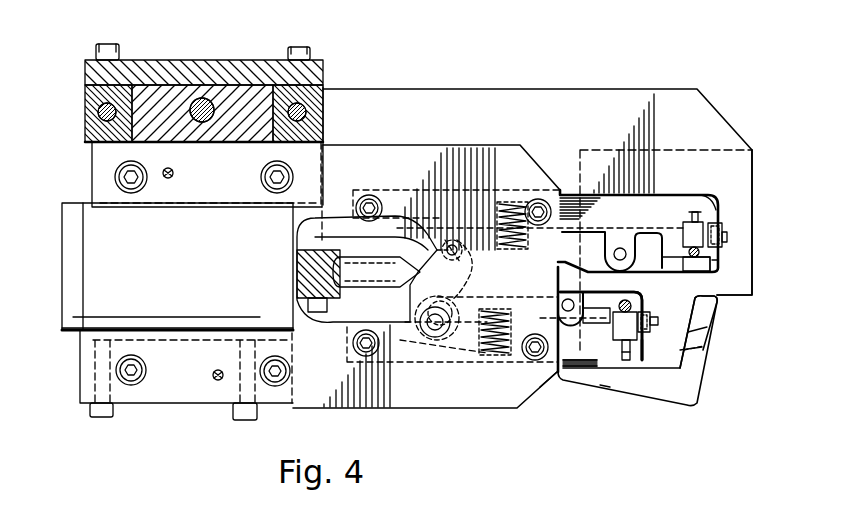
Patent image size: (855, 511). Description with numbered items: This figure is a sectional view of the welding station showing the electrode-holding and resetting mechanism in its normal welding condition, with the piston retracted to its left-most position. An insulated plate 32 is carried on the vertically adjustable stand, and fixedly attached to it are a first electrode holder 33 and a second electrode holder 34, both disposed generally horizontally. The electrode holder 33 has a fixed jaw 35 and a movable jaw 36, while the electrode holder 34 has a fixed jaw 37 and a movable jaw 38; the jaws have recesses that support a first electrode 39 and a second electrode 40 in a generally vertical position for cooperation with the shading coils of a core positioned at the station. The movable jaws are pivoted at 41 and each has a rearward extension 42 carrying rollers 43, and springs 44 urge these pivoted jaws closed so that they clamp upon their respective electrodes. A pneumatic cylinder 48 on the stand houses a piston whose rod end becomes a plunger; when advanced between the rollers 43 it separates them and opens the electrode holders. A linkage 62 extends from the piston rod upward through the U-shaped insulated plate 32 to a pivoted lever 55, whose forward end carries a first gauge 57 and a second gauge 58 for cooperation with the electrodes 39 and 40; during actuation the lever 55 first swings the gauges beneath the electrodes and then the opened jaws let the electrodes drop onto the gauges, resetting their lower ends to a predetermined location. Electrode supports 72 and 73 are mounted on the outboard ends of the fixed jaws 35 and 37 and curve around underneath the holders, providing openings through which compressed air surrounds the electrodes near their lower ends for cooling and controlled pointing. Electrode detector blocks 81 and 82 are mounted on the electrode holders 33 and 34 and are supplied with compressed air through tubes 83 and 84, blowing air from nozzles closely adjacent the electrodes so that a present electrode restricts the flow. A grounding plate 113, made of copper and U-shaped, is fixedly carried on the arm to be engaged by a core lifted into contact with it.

The insulated plate 32 is at (400, 408).
The first electrode holder 33 is at (572, 193).
The second electrode holder 34 is at (555, 378).
The fixed jaw 35 is at (707, 208).
The movable jaw 36 is at (712, 265).
The fixed jaw 37 is at (643, 362).
The movable jaw 38 is at (637, 292).
The first electrode 39 is at (688, 266).
The second electrode 40 is at (631, 304).
The pivot 41 is at (623, 248).
The rearward extension 42 is at (489, 241).
The rollers 43 is at (468, 266).
The springs 44 is at (505, 200).
The pneumatic cylinder 48 is at (100, 272).
The pivoted lever 55 is at (603, 385).
The first gauge 57 is at (708, 327).
The second gauge 58 is at (590, 367).
The linkage 62 is at (303, 240).
The electrode support 72 is at (727, 227).
The electrode support 73 is at (642, 332).
The electrode detector block 81 is at (686, 220).
The electrode detector block 82 is at (637, 336).
The tube 83 is at (698, 212).
The tube 84 is at (623, 360).
The grounding plate 113 is at (745, 296).